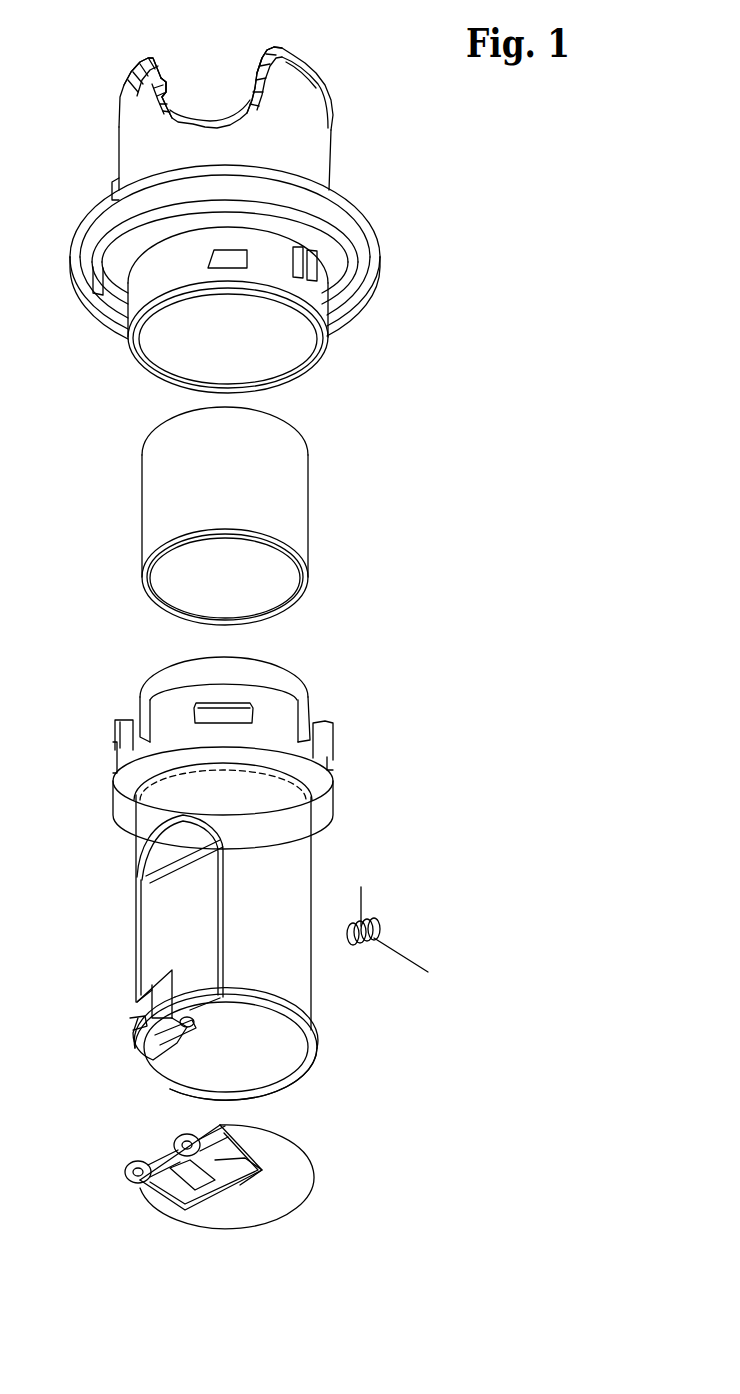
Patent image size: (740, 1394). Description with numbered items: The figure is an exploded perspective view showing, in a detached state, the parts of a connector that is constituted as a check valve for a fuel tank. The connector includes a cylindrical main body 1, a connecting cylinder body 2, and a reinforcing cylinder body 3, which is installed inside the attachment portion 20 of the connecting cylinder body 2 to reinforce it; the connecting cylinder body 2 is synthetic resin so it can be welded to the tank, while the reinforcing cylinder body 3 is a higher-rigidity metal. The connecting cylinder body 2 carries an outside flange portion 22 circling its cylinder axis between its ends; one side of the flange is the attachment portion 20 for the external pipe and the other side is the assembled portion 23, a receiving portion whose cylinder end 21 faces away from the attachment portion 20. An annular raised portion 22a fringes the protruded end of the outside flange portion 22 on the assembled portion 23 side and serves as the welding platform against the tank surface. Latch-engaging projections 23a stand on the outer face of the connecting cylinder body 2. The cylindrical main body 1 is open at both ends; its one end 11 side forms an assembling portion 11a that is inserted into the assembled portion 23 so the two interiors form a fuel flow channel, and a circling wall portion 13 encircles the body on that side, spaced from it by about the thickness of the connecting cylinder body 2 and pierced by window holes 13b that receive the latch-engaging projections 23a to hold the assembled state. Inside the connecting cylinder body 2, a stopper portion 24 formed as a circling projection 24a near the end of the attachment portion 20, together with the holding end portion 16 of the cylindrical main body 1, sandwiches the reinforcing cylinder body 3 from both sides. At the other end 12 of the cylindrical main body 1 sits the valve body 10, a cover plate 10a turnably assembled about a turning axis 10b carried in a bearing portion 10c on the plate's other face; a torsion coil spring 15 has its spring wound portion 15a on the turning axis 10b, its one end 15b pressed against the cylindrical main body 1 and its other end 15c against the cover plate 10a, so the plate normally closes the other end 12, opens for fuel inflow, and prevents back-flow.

The cylindrical main body 1 is at (297, 872).
The connecting cylinder body 2 is at (330, 163).
The reinforcing cylinder body 3 is at (293, 510).
The valve body 10 is at (275, 1202).
The cover plate 10a is at (290, 1177).
The turning axis 10b is at (132, 1048).
The bearing portion 10c is at (177, 1142).
The one end of the cylinder 11 is at (300, 682).
The assembling portion 11a is at (298, 700).
The other end of the cylinder 12 is at (313, 1060).
The circling wall portion 13 is at (115, 777).
The window holes 13b is at (233, 717).
The torsion coil spring 15 is at (352, 940).
The spring wound portion 15a is at (367, 944).
The one end of the spring 15b is at (362, 893).
The other end of the spring 15c is at (417, 958).
The holding end portion 16 is at (182, 656).
The attachment portion 20 is at (222, 100).
The cylinder end 21 is at (320, 358).
The outside flange portion 22 is at (380, 255).
The annular raised portion 22a is at (362, 290).
The assembled portion 23 is at (133, 358).
The latch-engaging projections 23a is at (230, 262).
The stopper portion 24 is at (253, 82).
The circling projection 24a is at (217, 72).